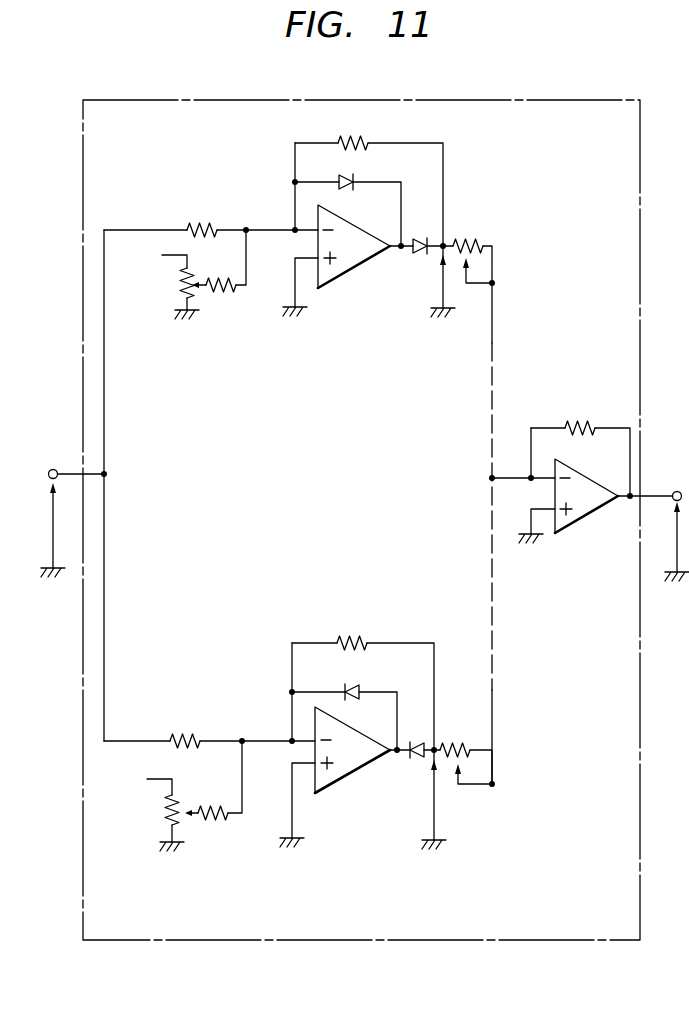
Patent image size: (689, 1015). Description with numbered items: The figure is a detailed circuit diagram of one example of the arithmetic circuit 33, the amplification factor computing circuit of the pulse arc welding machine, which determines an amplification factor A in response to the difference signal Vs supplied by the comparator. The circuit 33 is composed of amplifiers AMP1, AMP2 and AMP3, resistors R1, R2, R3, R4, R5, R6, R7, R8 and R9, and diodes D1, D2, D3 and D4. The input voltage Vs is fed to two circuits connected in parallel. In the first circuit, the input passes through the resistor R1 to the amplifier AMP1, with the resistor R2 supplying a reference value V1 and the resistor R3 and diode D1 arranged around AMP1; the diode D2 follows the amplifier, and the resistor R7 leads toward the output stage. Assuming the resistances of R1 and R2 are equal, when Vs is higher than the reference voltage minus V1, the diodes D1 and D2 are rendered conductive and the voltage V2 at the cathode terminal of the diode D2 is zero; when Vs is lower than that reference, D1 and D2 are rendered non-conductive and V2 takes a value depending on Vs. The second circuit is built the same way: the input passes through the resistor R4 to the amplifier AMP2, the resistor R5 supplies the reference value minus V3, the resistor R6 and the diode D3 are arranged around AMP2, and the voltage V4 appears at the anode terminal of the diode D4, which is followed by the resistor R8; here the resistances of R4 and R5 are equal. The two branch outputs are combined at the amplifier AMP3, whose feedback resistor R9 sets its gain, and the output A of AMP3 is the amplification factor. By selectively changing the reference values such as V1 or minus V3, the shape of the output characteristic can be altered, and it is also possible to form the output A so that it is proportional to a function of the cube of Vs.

The amplification factor computing circuit 33 is at (293, 940).
The resistor R1 is at (211, 219).
The resistor R2 is at (222, 293).
The resistor R3 is at (369, 183).
The resistor R4 is at (209, 727).
The resistor R5 is at (217, 791).
The resistor R6 is at (363, 682).
The resistor R7 is at (459, 252).
The resistor R8 is at (458, 753).
The resistor R9 is at (580, 445).
The diode D1 is at (348, 177).
The diode D2 is at (421, 238).
The diode D3 is at (357, 684).
The diode D4 is at (416, 742).
The amplifier AMP1 is at (354, 246).
The amplifier AMP2 is at (353, 768).
The amplifier AMP3 is at (596, 512).
The reference voltage V1 is at (196, 295).
The voltage V2 is at (435, 281).
The reference voltage V3 is at (158, 823).
The voltage V4 is at (426, 799).
The input voltage Vs is at (64, 524).
The output A is at (673, 537).